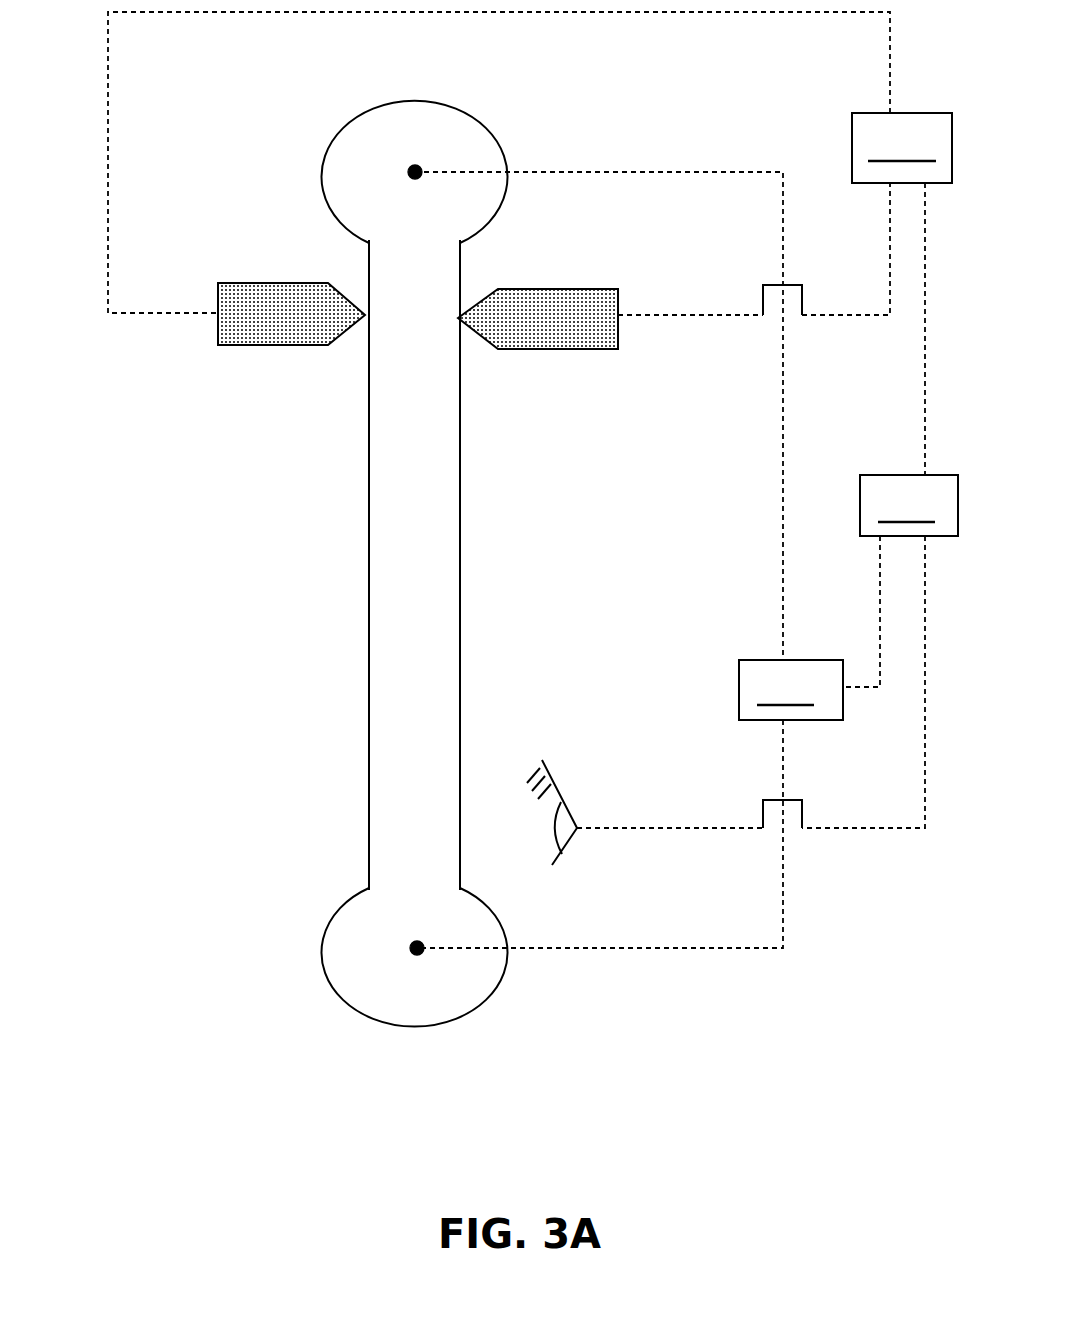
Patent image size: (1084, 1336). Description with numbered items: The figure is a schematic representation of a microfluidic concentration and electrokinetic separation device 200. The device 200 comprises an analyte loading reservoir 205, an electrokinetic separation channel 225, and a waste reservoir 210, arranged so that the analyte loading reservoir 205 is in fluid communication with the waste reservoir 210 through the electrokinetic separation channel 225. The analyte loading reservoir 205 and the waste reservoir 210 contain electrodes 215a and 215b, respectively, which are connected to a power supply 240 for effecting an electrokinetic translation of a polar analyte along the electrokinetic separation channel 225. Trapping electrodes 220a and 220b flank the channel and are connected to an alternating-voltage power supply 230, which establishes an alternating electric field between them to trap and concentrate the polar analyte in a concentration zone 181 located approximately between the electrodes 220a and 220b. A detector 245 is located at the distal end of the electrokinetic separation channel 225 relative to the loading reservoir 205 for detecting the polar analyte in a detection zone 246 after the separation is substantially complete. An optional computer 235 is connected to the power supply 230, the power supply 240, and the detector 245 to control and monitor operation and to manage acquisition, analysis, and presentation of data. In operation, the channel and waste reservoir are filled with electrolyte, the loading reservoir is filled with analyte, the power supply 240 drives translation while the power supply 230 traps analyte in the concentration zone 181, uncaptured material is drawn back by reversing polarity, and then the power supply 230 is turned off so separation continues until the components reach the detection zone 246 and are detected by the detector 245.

The microfluidic device 200 is at (190, 694).
The analyte loading reservoir 205 is at (489, 125).
The waste reservoir 210 is at (325, 985).
The electrode 215a is at (412, 165).
The electrode 215b is at (410, 960).
The trapping electrode 220a is at (287, 345).
The trapping electrode 220b is at (600, 352).
The concentration zone 181 is at (414, 310).
The electrokinetic separation channel 225 is at (465, 583).
The alternating-voltage power supply 230 is at (530, 163).
The computer 235 is at (860, 505).
The power supply 240 is at (629, 560).
The detector 245 is at (645, 803).
The detection zone 246 is at (395, 802).